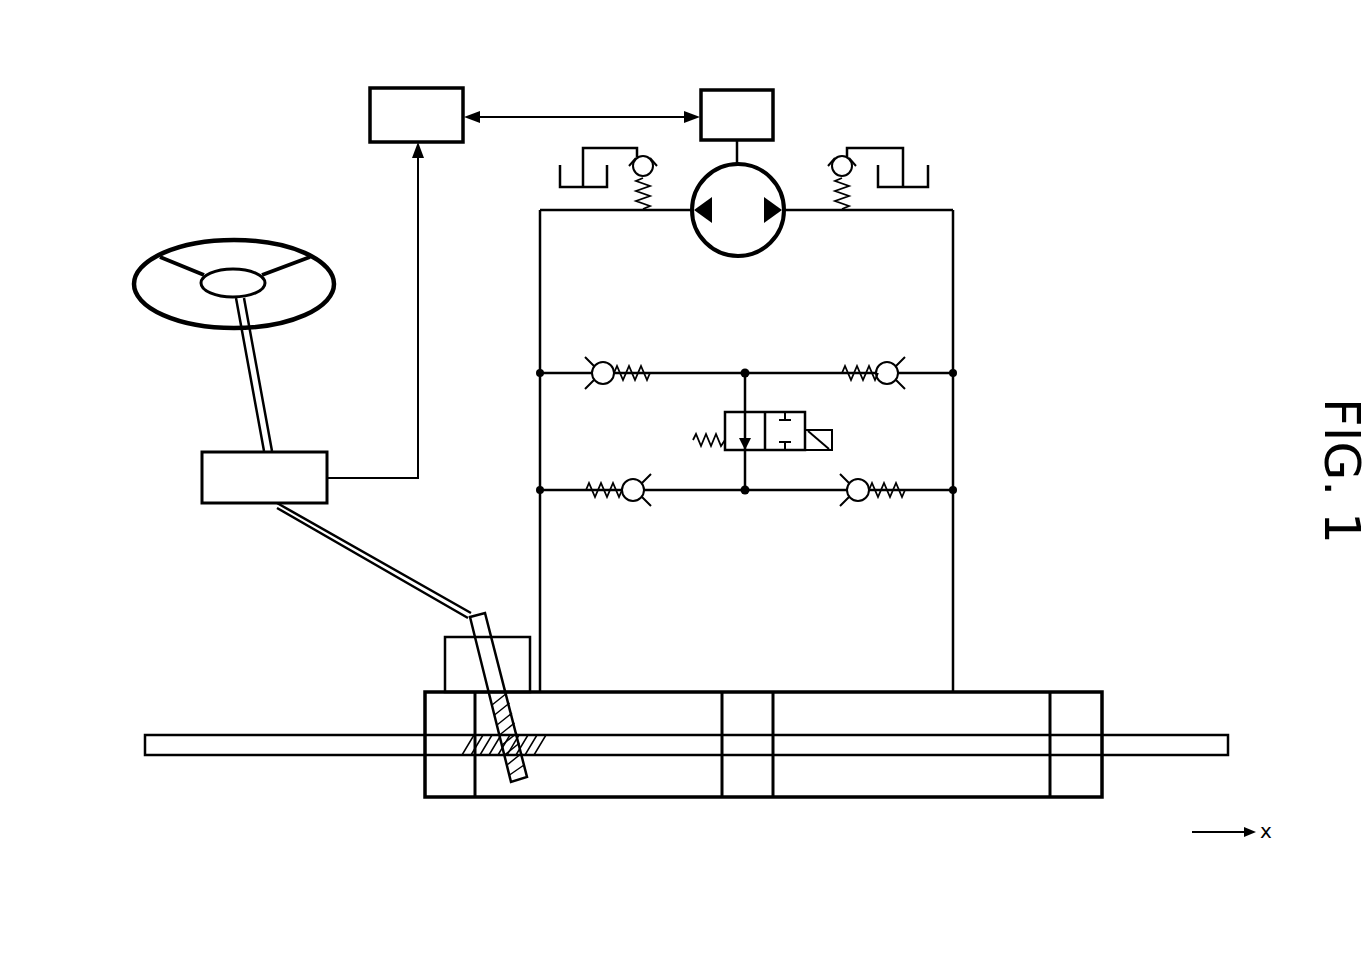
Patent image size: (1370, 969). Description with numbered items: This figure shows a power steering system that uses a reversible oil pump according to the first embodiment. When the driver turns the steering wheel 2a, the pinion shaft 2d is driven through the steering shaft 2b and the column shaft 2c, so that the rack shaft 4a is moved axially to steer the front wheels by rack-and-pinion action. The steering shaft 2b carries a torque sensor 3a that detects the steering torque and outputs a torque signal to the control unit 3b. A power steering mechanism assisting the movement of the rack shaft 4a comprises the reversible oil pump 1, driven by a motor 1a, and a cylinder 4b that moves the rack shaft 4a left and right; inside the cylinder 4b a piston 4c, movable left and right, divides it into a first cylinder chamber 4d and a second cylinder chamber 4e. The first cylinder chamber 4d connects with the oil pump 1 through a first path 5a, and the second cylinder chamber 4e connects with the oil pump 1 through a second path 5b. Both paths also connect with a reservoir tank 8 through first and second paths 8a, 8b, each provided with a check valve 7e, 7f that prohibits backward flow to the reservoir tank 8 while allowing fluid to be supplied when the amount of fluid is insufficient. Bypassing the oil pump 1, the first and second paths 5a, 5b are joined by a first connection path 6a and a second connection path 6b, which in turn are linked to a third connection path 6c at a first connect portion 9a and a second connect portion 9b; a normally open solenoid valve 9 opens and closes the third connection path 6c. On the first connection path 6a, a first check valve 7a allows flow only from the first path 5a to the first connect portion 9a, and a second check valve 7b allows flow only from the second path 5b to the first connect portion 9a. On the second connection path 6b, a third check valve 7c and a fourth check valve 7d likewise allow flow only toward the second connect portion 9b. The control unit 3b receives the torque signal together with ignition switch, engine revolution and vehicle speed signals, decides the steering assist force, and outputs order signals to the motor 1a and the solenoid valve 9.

The reversible oil pump 1 is at (762, 168).
The motor 1a is at (745, 90).
The steering wheel 2a is at (165, 255).
The steering shaft 2b is at (250, 404).
The column shaft 2c is at (372, 565).
The pinion shaft 2d is at (487, 614).
The torque sensor 3a is at (202, 476).
The control unit 3b is at (400, 88).
The rack shaft 4a is at (248, 757).
The cylinder 4b is at (452, 808).
The piston 4c is at (745, 773).
The first cylinder chamber 4d is at (657, 768).
The second cylinder chamber 4e is at (908, 768).
The first path 5a is at (539, 268).
The second path 5b is at (953, 285).
The first connection path 6a is at (697, 373).
The second connection path 6b is at (700, 492).
The third connection path 6c is at (742, 472).
The first check valve 7a is at (600, 360).
The second check valve 7b is at (893, 360).
The third check valve 7c is at (626, 504).
The fourth check valve 7d is at (885, 502).
The check valve 7e is at (648, 157).
The check valve 7f is at (845, 155).
The reservoir tank 8 is at (560, 176).
The first path to reservoir 8a is at (600, 148).
The second path to reservoir 8b is at (900, 148).
The solenoid valve 9 is at (832, 438).
The first connect portion 9a is at (748, 373).
The second connect portion 9b is at (748, 492).